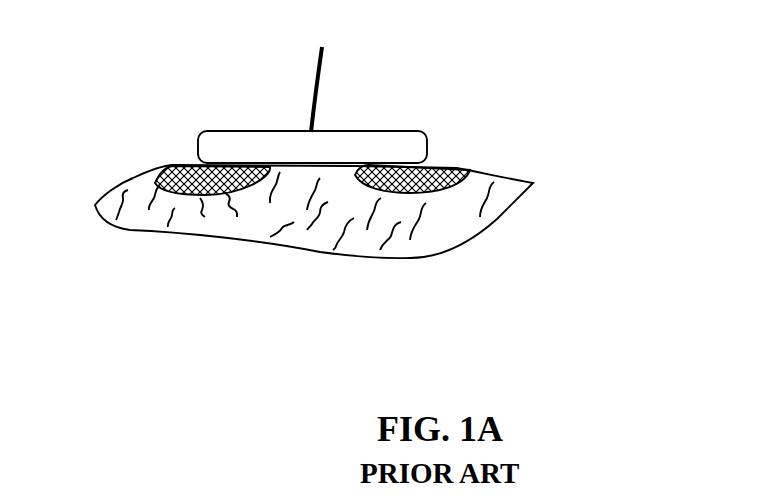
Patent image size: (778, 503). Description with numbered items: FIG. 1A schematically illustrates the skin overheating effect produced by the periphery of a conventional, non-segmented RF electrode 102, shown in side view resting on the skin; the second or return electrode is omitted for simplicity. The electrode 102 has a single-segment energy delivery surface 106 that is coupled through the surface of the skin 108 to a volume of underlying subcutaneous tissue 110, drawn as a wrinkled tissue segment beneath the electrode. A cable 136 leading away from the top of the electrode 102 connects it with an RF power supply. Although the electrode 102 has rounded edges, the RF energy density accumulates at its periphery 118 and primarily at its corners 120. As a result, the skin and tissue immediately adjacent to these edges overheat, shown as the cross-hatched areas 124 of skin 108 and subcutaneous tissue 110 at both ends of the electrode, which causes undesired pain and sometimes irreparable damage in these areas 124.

The non-segmented RF electrode 102 is at (397, 143).
The single-segment energy delivery surface 106 is at (335, 163).
The skin 108 is at (513, 178).
The subcutaneous tissue 110 is at (295, 227).
The periphery of the electrode 118 is at (198, 160).
The corners of the electrode 120 is at (198, 162).
The overheated areas 124 is at (200, 183).
The cables 136 is at (312, 90).